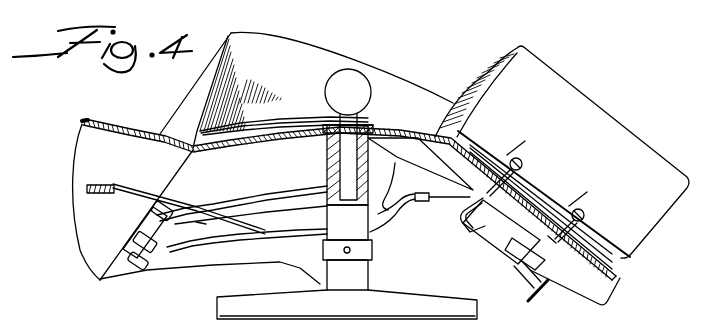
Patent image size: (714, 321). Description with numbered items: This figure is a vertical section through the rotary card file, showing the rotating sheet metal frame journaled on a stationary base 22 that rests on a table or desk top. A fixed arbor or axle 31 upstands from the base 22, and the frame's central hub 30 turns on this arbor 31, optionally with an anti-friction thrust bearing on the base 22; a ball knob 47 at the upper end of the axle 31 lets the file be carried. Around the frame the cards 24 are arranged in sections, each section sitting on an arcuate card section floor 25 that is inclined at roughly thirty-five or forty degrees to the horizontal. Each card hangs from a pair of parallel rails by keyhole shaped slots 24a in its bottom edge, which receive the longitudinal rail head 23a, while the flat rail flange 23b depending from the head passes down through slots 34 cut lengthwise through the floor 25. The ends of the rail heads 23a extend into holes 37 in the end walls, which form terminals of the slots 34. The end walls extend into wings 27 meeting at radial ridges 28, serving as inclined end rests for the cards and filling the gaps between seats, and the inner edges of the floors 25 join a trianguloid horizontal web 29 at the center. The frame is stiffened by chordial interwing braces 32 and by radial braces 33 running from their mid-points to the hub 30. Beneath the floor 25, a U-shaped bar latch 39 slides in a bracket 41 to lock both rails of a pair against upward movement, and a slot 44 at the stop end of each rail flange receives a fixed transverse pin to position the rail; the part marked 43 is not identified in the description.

The stationary base 22 is at (388, 299).
The longitudinal rail head 23a is at (576, 209).
The rail flange 23b is at (200, 223).
The cards 24 is at (265, 35).
The keyhole shaped slot 24a is at (514, 158).
The card section floor 25 is at (622, 274).
The wings 27 is at (80, 152).
The radial ridges 28 is at (124, 118).
The trianguloid horizontal web 29 is at (408, 134).
The central hub 30 is at (326, 166).
The fixed arbor or axle 31 is at (358, 125).
The chordial interwing braces 32 is at (95, 193).
The radial braces 33 is at (221, 205).
The slots 34 is at (240, 185).
The holes 37 is at (100, 247).
The U-shaped bar latch 39 is at (150, 253).
The bracket 41 is at (140, 217).
The pin 43 is at (536, 302).
The slot 44 is at (397, 192).
The ball knob 47 is at (352, 73).